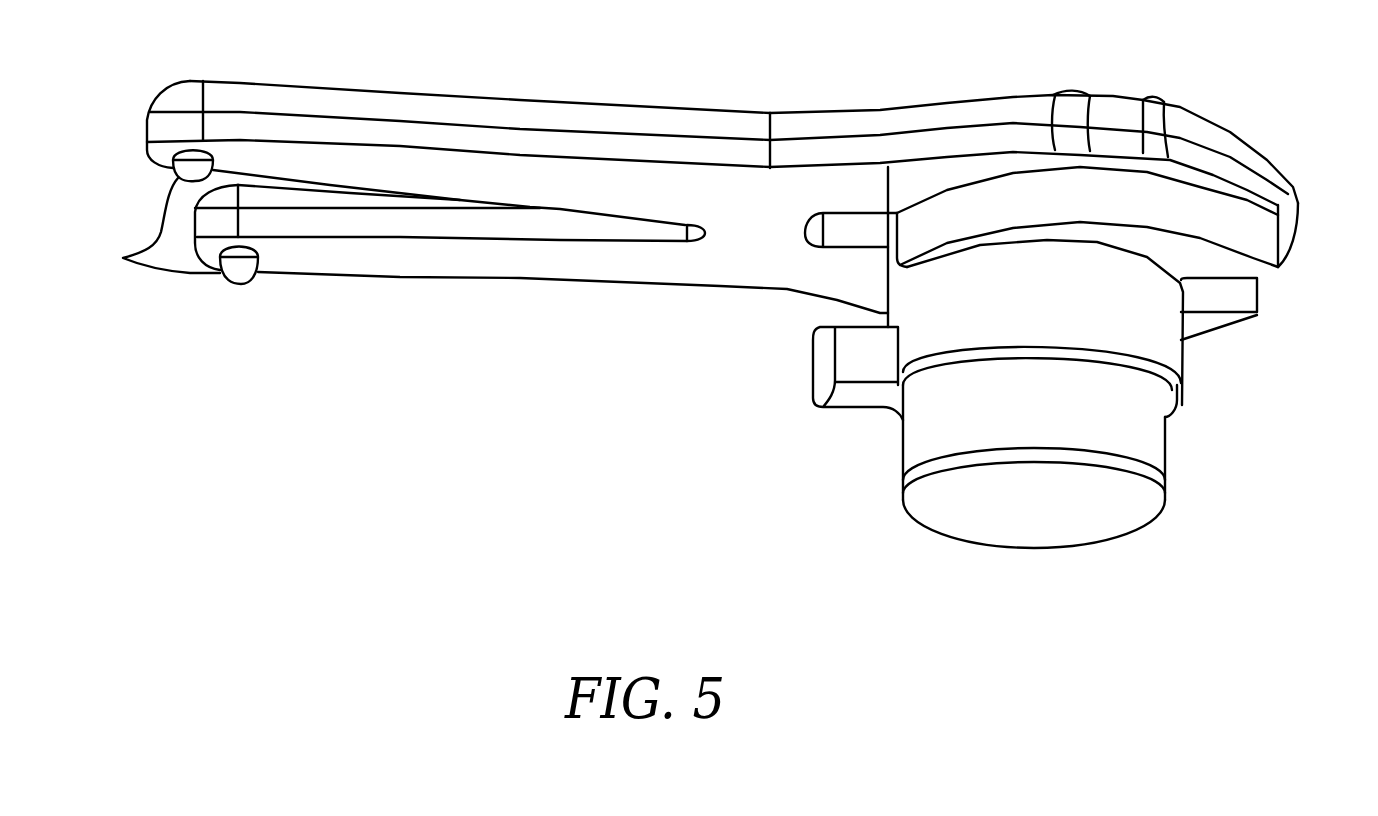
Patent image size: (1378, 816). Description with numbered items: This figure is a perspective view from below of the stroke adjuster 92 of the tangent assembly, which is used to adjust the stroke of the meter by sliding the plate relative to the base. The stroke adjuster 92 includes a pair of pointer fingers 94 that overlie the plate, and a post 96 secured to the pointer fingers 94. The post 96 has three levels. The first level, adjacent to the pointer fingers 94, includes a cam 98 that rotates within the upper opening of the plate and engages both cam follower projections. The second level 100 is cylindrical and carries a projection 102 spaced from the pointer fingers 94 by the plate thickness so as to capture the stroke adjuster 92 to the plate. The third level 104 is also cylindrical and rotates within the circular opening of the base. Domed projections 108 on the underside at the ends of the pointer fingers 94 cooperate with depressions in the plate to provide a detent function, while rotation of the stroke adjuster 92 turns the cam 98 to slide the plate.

The stroke adjuster 92 is at (627, 418).
The pointer fingers 94 is at (277, 100).
The post 96 is at (1025, 503).
The cam 98 is at (1238, 220).
The second level 100 is at (1143, 342).
The projection 102 is at (852, 353).
The third level 104 is at (1123, 435).
The domed projections 108 is at (123, 258).